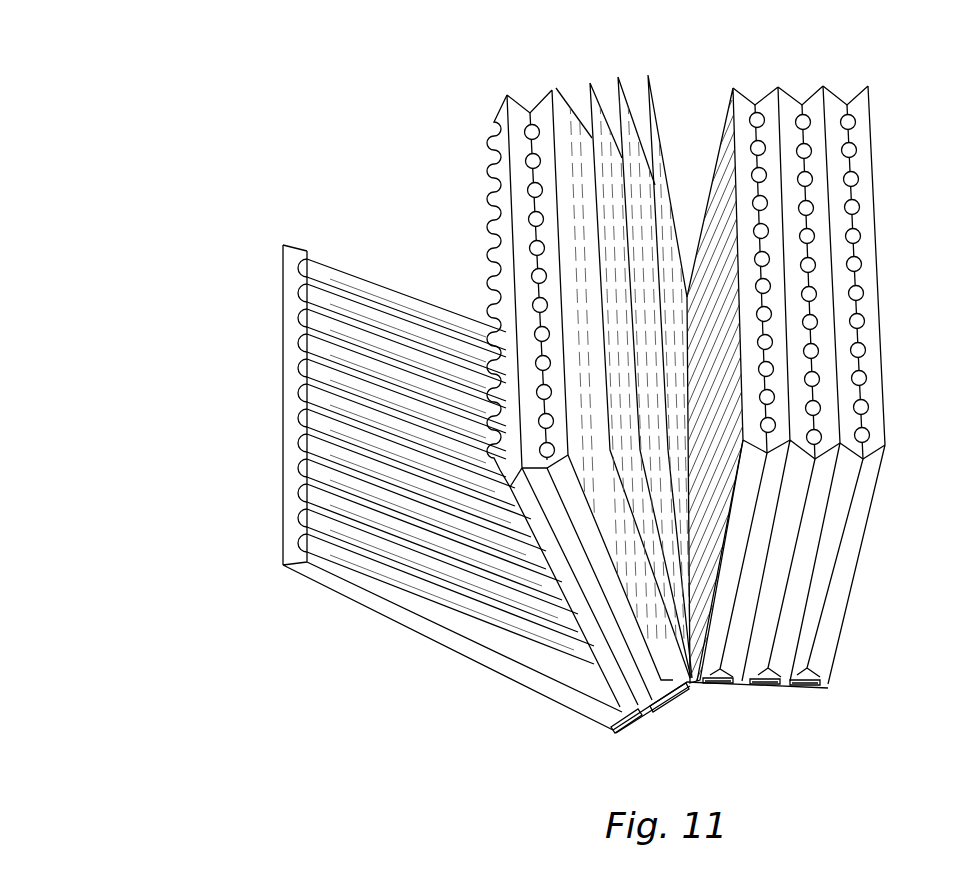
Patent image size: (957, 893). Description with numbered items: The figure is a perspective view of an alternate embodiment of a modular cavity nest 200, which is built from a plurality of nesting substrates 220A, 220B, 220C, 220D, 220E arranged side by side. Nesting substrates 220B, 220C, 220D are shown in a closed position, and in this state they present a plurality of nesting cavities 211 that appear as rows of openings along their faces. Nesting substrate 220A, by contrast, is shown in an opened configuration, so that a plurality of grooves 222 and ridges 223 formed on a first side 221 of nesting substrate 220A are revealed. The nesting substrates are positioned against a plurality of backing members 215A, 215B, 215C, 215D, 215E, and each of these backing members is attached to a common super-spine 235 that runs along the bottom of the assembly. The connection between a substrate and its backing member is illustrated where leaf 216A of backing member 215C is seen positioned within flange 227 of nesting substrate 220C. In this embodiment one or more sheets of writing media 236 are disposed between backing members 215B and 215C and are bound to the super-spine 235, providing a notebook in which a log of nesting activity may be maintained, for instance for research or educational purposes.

The modular cavity nest 200 is at (225, 113).
The nesting substrate 220A is at (285, 245).
The first side 221 is at (340, 262).
The grooves 222 is at (302, 318).
The ridges 223 is at (305, 412).
The nesting substrate 220B is at (541, 92).
The sheets of writing media 236 is at (597, 102).
The leaf 216A is at (720, 170).
The flange 227 is at (727, 113).
The nesting substrate 220C is at (737, 87).
The nesting cavities 211 is at (757, 115).
The nesting substrate 220D is at (822, 87).
The nesting substrate 220E is at (866, 92).
The super-spine 235 is at (832, 690).
The backing member 215A is at (610, 729).
The backing member 215B is at (655, 706).
The backing member 215C is at (705, 690).
The backing member 215D is at (760, 692).
The backing member 215E is at (812, 692).